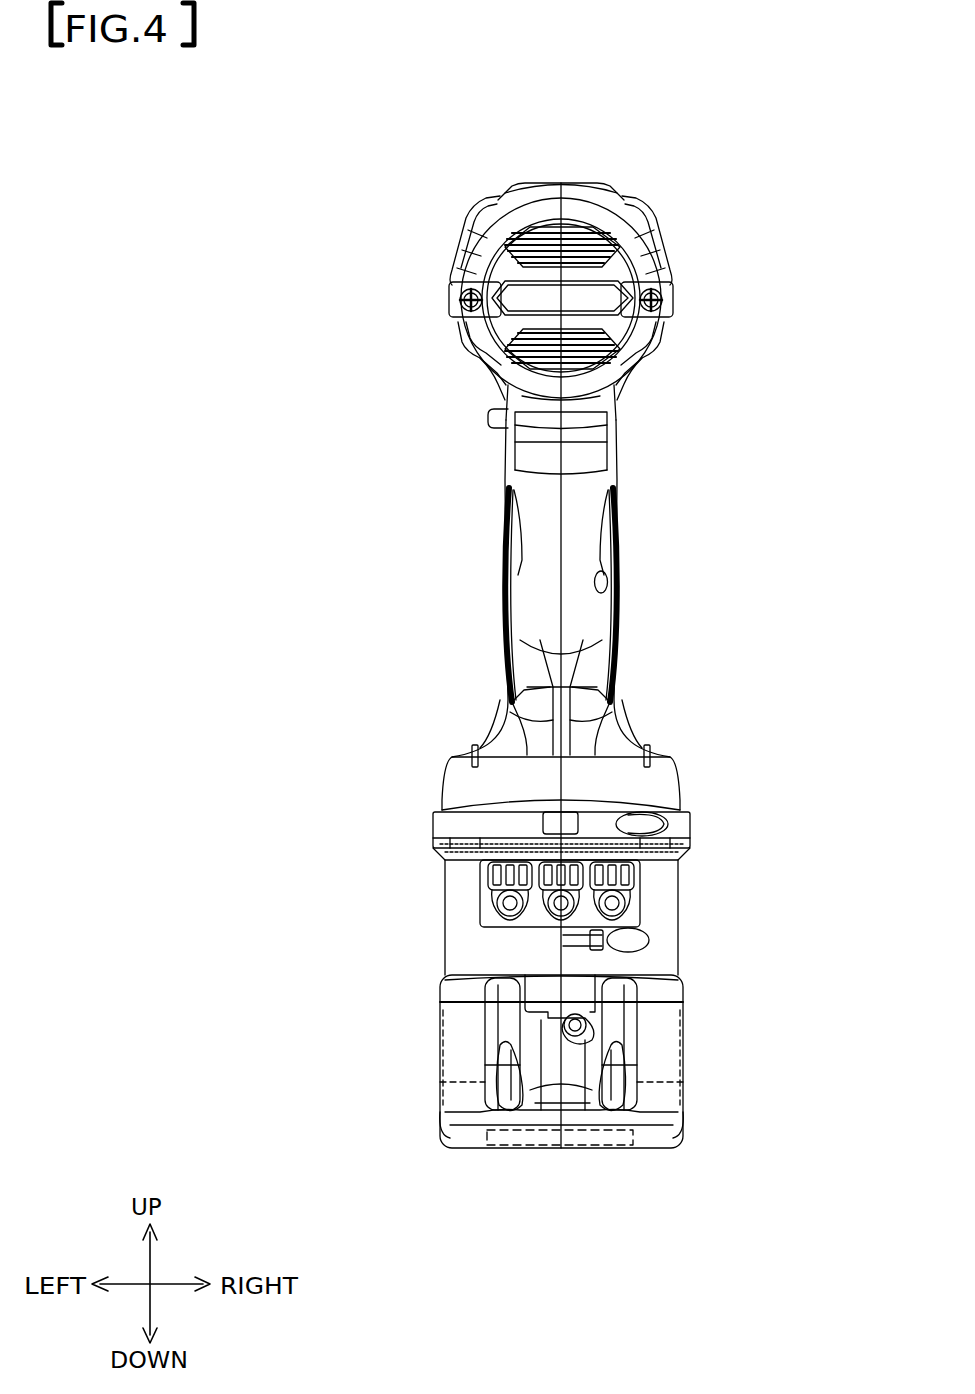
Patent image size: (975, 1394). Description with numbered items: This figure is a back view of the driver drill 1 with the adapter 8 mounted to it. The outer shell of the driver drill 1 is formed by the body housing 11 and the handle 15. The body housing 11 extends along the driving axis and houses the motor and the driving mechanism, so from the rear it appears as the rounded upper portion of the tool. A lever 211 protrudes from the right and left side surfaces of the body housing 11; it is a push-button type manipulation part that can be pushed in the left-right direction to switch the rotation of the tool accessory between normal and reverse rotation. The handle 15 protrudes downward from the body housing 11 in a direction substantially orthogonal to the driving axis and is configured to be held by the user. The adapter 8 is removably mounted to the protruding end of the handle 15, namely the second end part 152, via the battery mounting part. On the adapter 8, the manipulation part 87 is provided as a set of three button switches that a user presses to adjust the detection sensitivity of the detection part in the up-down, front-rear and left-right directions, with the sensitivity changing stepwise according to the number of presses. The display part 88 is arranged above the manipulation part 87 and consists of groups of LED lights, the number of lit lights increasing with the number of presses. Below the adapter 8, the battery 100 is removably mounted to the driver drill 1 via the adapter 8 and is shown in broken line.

The driver drill 1 is at (793, 118).
The body housing 11 is at (619, 158).
The lever 211 is at (489, 420).
The handle 15 is at (494, 553).
The second end part 152 is at (431, 812).
The adapter 8 is at (386, 889).
The display part 88 is at (634, 880).
The manipulation part 87 is at (641, 912).
The battery 100 is at (712, 1054).